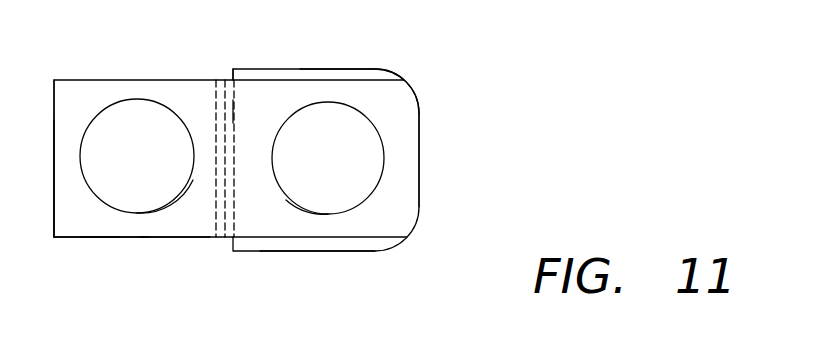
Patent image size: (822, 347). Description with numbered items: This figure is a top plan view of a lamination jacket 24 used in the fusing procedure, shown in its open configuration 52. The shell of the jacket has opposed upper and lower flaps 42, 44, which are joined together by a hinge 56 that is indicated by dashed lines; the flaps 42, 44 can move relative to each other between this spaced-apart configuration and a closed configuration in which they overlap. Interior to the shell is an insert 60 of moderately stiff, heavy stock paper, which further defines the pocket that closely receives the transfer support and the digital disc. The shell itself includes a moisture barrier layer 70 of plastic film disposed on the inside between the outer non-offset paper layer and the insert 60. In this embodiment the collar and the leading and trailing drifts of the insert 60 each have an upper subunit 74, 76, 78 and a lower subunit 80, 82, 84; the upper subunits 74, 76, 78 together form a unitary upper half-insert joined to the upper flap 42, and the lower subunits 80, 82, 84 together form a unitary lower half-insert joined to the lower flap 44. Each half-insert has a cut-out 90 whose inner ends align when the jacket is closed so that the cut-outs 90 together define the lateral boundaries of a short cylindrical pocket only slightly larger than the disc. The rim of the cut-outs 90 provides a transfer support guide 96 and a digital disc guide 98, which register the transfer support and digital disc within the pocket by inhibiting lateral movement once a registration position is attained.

The lamination jacket 24 is at (317, 160).
The open configuration 52 is at (565, 160).
The upper flap 42 is at (68, 237).
The lower flap 44 is at (337, 262).
The hinge 56 is at (222, 80).
The insert 60 is at (93, 112).
The moisture barrier layer 70 is at (143, 162).
The upper subunit of collar 74 is at (109, 227).
The upper subunit of leading drift 76 is at (72, 193).
The upper subunit of trailing drift 78 is at (167, 227).
The lower subunit of collar 80 is at (347, 88).
The lower subunit of leading drift 82 is at (407, 158).
The lower subunit of trailing drift 84 is at (249, 85).
The cut-out 90 is at (284, 202).
The transfer support guide 96 is at (233, 123).
The digital disc guide 98 is at (381, 186).